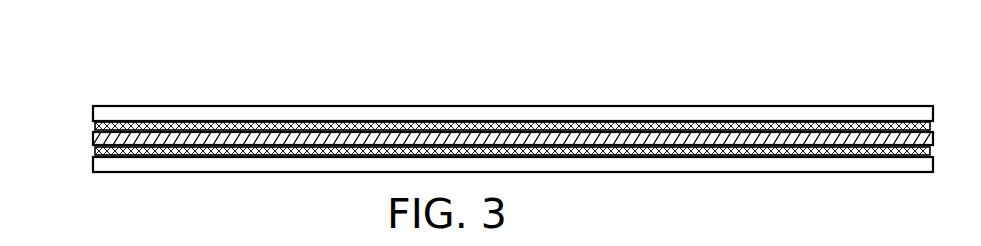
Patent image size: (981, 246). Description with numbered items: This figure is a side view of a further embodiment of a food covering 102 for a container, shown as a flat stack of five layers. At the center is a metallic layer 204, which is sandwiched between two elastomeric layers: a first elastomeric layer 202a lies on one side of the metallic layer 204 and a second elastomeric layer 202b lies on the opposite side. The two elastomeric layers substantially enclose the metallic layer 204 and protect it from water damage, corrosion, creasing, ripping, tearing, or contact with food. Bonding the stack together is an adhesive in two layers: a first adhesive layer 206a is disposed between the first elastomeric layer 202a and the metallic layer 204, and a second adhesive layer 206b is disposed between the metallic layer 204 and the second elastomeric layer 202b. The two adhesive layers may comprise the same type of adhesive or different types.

The food covering 102 is at (98, 67).
The first elastomeric layer 202a is at (96, 110).
The second elastomeric layer 202b is at (96, 166).
The metallic layer 204 is at (96, 138).
The first adhesive layer 206a is at (163, 125).
The second adhesive layer 206b is at (203, 151).